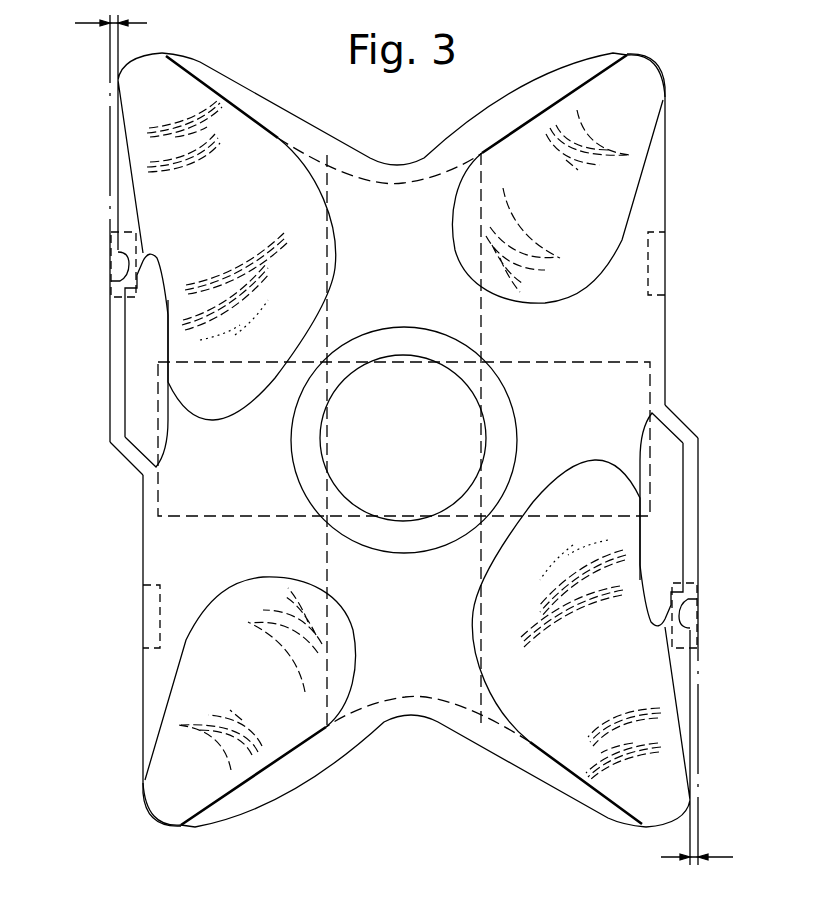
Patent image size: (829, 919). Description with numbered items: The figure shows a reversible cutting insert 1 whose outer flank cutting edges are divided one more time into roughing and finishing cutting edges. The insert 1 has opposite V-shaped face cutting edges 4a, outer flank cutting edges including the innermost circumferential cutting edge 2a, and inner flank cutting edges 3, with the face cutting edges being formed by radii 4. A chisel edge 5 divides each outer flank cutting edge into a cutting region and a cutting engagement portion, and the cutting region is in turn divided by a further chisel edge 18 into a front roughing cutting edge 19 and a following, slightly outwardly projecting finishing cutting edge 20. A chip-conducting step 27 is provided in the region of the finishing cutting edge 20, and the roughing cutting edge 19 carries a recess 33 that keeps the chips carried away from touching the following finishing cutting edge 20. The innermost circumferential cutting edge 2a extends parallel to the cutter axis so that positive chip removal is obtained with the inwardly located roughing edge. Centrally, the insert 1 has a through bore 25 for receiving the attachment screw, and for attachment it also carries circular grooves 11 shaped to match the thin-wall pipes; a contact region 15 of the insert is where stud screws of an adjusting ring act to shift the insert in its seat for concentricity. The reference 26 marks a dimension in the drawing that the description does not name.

The reversible insert 1 is at (130, 190).
The innermost circumferential cutting edge 2a is at (143, 758).
The inner flank cutting edge 3 is at (300, 775).
The radius 4 is at (150, 803).
The face cutting edge 4a is at (222, 778).
The chisel edge 5 is at (125, 458).
The groove 11 is at (172, 498).
The contact region 15 is at (143, 610).
The chisel edge 18 is at (115, 262).
The roughing cutting edge 19 is at (117, 108).
The finishing cutting edge 20 is at (110, 325).
The through bore 25 is at (447, 398).
The wall thickness 26 is at (110, 30).
The chip-conducting step 27 is at (135, 370).
The recess 33 is at (180, 722).